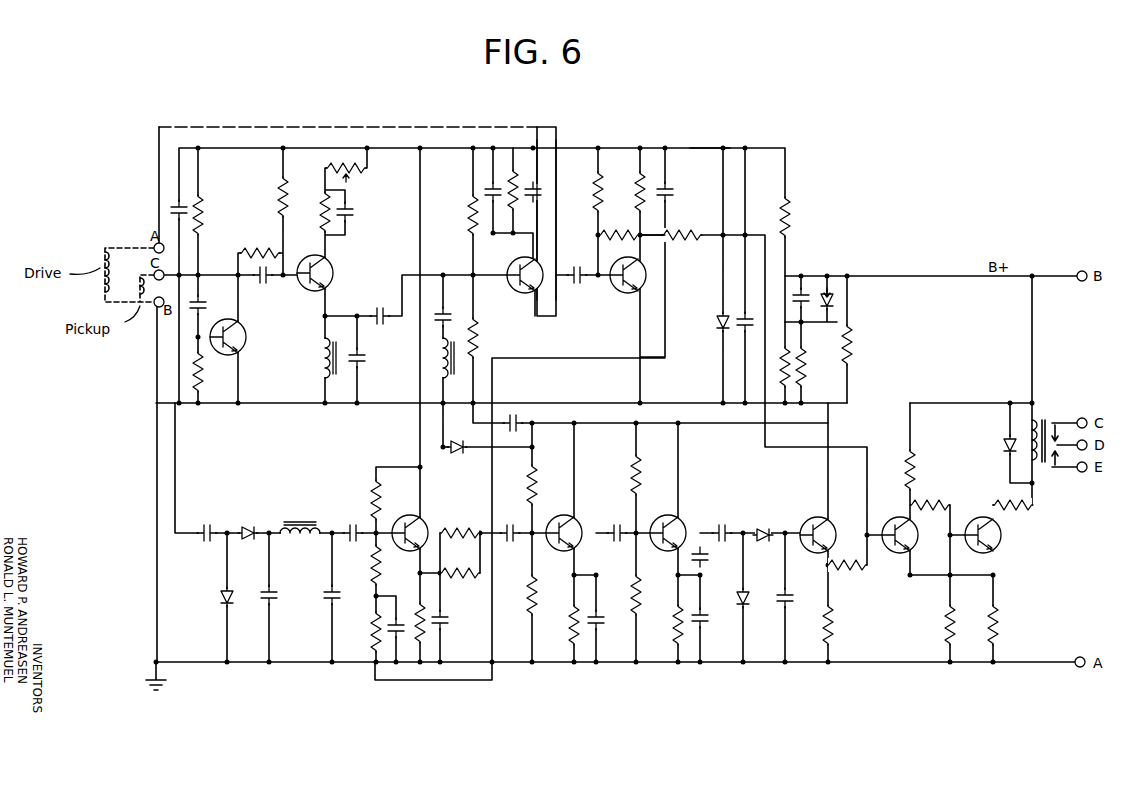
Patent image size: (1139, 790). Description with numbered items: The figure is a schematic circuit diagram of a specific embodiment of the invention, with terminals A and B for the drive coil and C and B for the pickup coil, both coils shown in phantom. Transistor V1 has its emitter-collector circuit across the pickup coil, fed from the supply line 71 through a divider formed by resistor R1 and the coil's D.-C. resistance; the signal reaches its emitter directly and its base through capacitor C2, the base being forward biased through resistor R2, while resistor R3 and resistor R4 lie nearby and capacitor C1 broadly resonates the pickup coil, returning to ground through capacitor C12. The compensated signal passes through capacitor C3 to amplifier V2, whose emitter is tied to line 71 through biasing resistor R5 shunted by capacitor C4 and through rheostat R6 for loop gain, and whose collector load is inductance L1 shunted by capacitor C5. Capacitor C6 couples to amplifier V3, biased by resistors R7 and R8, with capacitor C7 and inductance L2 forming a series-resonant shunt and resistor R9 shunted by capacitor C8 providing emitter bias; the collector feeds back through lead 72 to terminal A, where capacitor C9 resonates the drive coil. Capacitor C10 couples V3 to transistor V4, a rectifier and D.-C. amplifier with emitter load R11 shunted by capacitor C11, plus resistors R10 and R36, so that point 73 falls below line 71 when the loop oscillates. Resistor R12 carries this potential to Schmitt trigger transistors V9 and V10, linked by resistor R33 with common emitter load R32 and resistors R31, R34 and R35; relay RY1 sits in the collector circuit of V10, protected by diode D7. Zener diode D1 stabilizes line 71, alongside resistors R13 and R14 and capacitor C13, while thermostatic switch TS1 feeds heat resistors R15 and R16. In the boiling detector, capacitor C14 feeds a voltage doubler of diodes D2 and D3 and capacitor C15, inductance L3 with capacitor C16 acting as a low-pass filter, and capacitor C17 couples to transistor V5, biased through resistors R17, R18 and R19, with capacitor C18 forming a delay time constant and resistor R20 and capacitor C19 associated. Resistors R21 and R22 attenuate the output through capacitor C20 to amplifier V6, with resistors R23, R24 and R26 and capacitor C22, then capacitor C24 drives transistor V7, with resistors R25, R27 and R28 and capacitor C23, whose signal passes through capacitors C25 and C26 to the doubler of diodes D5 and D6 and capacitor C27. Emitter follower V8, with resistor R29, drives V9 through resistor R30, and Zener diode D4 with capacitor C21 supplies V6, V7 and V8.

The capacitor C1 is at (172, 208).
The resistor R1 is at (204, 214).
The resistor R4 is at (280, 200).
The resistor R3 is at (262, 250).
The biasing resistor R5 is at (320, 212).
The capacitor C4 is at (352, 212).
The rheostat R6 is at (343, 162).
The transistor V2 is at (334, 271).
The capacitor C3 is at (264, 283).
The capacitor C2 is at (202, 303).
The transistor V1 is at (246, 336).
The resistor R2 is at (203, 372).
The inductance L1 is at (318, 358).
The capacitor C5 is at (364, 358).
The capacitor C6 is at (380, 306).
The inductance L2 is at (435, 358).
The capacitor C7 is at (450, 313).
The resistor R7 is at (481, 338).
The capacitor C8 is at (485, 190).
The resistor R8 is at (465, 216).
The resistor R9 is at (521, 184).
The capacitor C9 is at (541, 189).
The lead 72 is at (548, 127).
The B+ line 71 is at (712, 148).
The emitter load R11 is at (634, 195).
The resistor R36 is at (592, 200).
The resistor R10 is at (620, 232).
The capacitor C11 is at (690, 184).
The resistor R12 is at (683, 244).
The point 73 is at (670, 235).
The transistor V3 is at (510, 266).
The capacitor C10 is at (582, 259).
The transistor V4 is at (618, 289).
The Zener diode D1 is at (715, 322).
The capacitor C12 is at (740, 330).
The resistor R13 is at (792, 215).
The capacitor C13 is at (795, 298).
The thermostatic switch TS1 is at (833, 311).
The resistor R14 is at (855, 345).
The heat resistor R15 is at (805, 370).
The heat resistor R16 is at (790, 380).
The relay RY1 is at (1048, 420).
The diode D7 is at (1003, 445).
The capacitor C21 is at (521, 420).
The Zener diode D4 is at (456, 453).
The resistor R17 is at (370, 490).
The transistor V5 is at (412, 514).
The resistor R22 is at (471, 519).
The resistor R21 is at (460, 566).
The resistor R20 is at (428, 612).
The capacitor C19 is at (448, 620).
The resistor R18 is at (383, 565).
The resistor R19 is at (370, 632).
The capacitor C18 is at (388, 632).
The capacitor C14 is at (209, 522).
The diode D2 is at (255, 525).
The inductance L3 is at (305, 518).
The capacitor C17 is at (353, 522).
The diode D3 is at (219, 597).
The capacitor C15 is at (279, 595).
The capacitor C16 is at (324, 598).
The resistor R26 is at (524, 485).
The transistor V6 is at (568, 516).
The capacitor C20 is at (512, 543).
The resistor R23 is at (524, 595).
The resistor R24 is at (567, 625).
The capacitor C22 is at (605, 622).
The capacitor C24 is at (615, 545).
The resistor R27 is at (628, 478).
The transistor V7 is at (668, 515).
The resistor R25 is at (630, 595).
The resistor R28 is at (670, 625).
The capacitor C23 is at (708, 621).
The capacitor C25 is at (708, 558).
The capacitor C26 is at (724, 523).
The diode D5 is at (764, 527).
The transistor V8 is at (814, 517).
The diode D6 is at (752, 598).
The capacitor C27 is at (780, 603).
The resistor R30 is at (843, 575).
The resistor R29 is at (836, 625).
The transistor V9 is at (895, 516).
The resistor R34 is at (918, 470).
The resistor R33 is at (935, 502).
The transistor V10 is at (1000, 548).
The resistor R35 is at (1018, 511).
The resistor R31 is at (942, 625).
The resistor R32 is at (1001, 625).